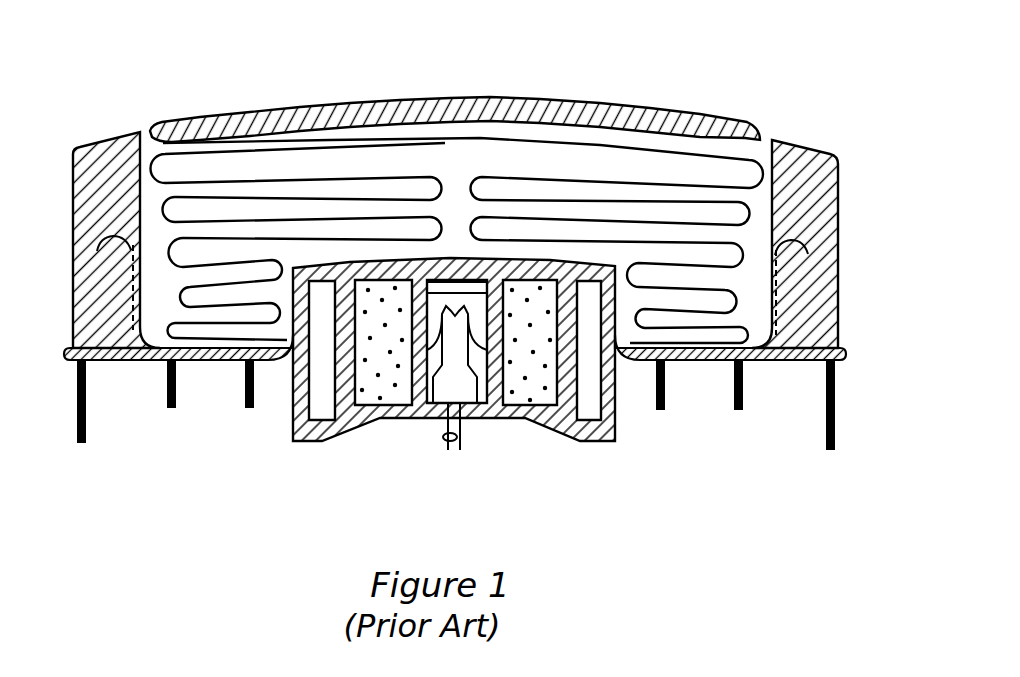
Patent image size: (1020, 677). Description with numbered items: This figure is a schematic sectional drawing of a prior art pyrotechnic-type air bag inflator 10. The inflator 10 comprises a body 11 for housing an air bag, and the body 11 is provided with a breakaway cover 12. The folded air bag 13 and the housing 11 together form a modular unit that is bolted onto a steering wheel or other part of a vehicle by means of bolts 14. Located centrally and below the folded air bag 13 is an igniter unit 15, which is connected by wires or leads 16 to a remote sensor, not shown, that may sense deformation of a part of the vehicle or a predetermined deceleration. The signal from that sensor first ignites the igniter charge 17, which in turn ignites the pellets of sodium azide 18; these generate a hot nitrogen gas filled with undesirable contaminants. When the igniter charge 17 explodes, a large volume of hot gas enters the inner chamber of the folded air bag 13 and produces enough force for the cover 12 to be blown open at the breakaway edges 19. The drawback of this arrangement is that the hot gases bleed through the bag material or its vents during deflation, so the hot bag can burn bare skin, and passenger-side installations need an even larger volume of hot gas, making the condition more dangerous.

The pyrotechnic-type air bag inflator 10 is at (222, 88).
The body 11 is at (830, 153).
The breakaway cover 12 is at (663, 112).
The folded air bag 13 is at (423, 163).
The bolts 14 is at (87, 420).
The igniter unit 15 is at (380, 445).
The wires or leads 16 is at (462, 442).
The igniter charge 17 is at (433, 307).
The pellets of sodium azide 18 is at (537, 393).
The breakaway edges 19 is at (136, 130).